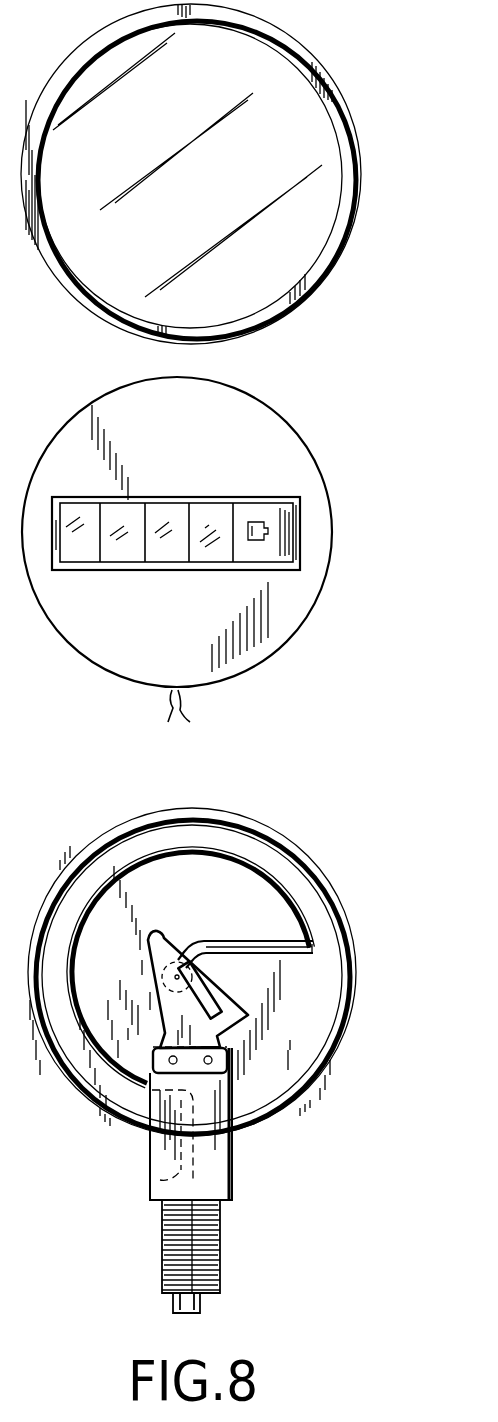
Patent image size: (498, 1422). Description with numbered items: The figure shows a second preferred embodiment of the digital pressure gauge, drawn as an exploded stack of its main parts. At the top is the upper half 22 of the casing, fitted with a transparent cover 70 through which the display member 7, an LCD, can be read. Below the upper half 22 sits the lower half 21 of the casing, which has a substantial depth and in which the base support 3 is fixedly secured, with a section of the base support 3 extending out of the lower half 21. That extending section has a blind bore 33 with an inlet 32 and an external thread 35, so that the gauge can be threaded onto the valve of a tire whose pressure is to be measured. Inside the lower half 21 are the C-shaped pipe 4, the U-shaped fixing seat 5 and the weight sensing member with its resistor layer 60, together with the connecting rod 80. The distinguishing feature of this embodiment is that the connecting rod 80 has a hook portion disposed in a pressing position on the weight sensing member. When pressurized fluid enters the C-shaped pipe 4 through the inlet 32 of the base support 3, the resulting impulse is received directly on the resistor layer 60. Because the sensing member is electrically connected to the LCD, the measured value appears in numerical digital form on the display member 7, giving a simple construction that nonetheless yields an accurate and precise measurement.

The upper half 22 is at (355, 181).
The transparent cover 70 is at (275, 627).
The display member 7 is at (185, 497).
The lower half 21 is at (340, 906).
The C-shaped pipe 4 is at (106, 893).
The connecting rod 80 is at (288, 956).
The resistor layer 60 is at (211, 941).
The U-shaped fixing seat 5 is at (202, 978).
The base support 3 is at (237, 1163).
The blind bore 33 is at (150, 1175).
The external thread 35 is at (222, 1245).
The inlet 32 is at (172, 1313).